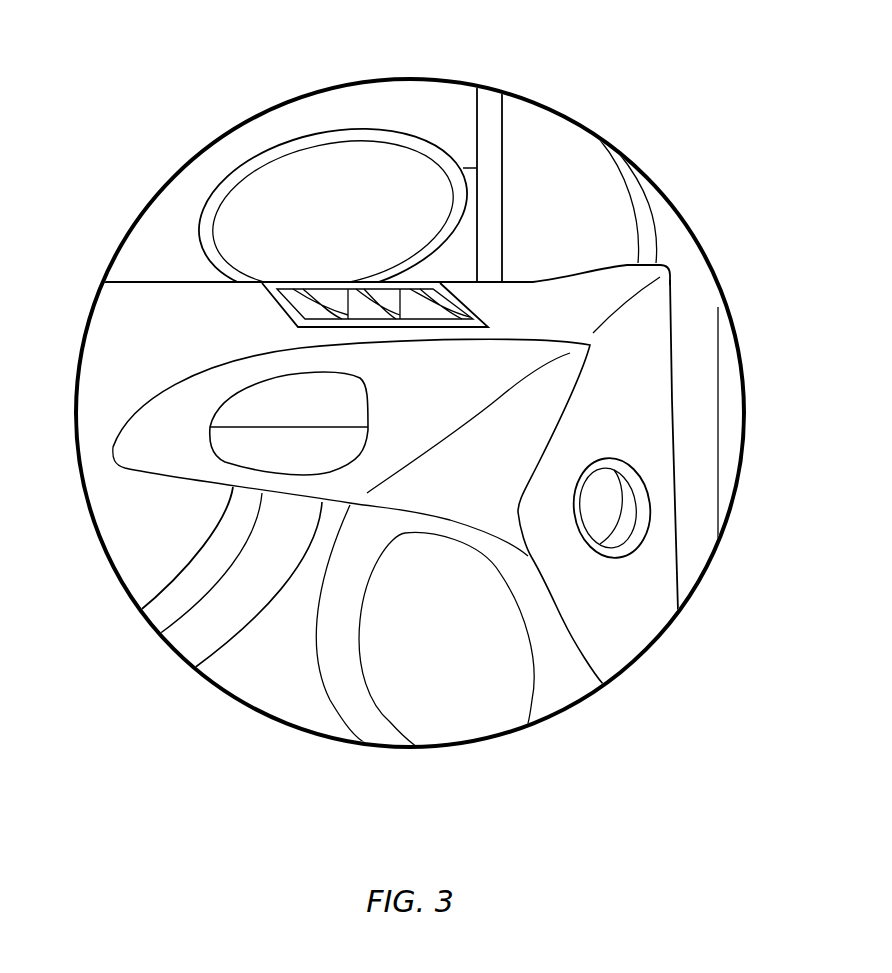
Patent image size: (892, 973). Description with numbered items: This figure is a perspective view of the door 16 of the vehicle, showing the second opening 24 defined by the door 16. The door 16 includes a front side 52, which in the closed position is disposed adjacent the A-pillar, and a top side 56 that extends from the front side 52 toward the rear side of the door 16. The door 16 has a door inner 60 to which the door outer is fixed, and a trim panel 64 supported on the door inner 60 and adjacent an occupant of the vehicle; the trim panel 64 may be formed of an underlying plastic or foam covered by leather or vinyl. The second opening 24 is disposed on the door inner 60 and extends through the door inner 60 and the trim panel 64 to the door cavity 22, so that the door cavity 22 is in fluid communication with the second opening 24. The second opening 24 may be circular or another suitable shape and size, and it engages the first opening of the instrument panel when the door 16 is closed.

The door 16 is at (468, 116).
The top side 56 is at (152, 284).
The trim panel 64 is at (533, 282).
The door inner 60 is at (695, 296).
The front side 52 is at (673, 351).
The second opening 24 is at (612, 455).
The door cavity 22 is at (603, 516).